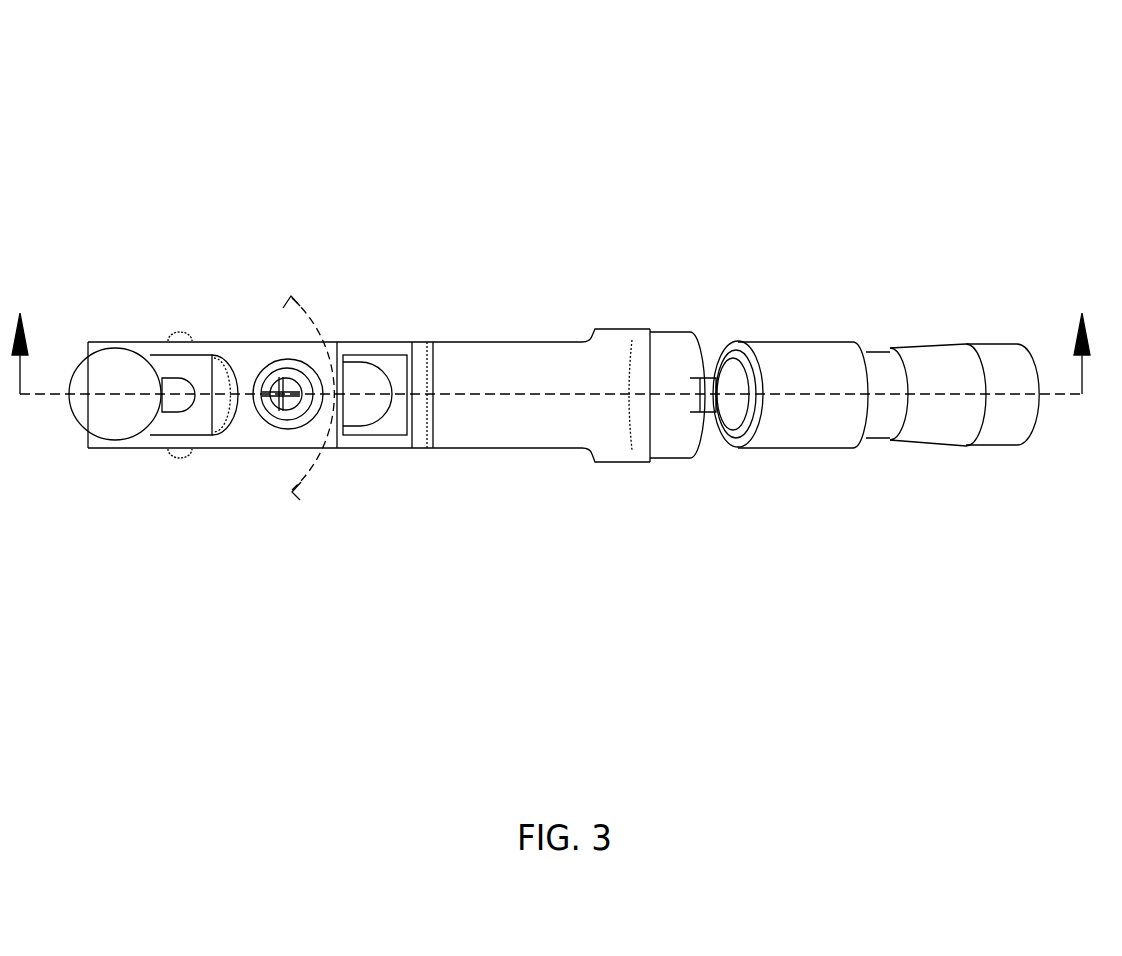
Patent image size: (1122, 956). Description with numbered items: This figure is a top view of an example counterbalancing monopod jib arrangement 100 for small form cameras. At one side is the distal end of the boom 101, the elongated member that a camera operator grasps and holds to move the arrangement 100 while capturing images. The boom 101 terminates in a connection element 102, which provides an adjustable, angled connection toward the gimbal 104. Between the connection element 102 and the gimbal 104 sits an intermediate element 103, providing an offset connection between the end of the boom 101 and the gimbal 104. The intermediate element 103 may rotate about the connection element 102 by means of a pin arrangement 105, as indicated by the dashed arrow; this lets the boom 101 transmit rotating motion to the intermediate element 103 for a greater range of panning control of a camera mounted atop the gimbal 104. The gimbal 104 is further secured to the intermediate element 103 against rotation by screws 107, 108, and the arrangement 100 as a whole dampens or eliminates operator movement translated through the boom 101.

The counterbalancing monopod jib arrangement 100 is at (716, 119).
The boom 101 is at (918, 339).
The connection element 102 is at (556, 338).
The intermediate element 103 is at (281, 329).
The gimbal joint 104 is at (125, 360).
The pin arrangement 105 is at (283, 430).
The screw 107 is at (175, 458).
The screw 108 is at (192, 332).